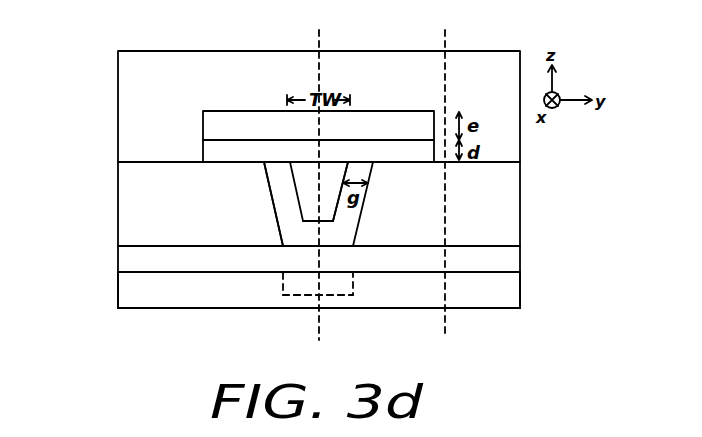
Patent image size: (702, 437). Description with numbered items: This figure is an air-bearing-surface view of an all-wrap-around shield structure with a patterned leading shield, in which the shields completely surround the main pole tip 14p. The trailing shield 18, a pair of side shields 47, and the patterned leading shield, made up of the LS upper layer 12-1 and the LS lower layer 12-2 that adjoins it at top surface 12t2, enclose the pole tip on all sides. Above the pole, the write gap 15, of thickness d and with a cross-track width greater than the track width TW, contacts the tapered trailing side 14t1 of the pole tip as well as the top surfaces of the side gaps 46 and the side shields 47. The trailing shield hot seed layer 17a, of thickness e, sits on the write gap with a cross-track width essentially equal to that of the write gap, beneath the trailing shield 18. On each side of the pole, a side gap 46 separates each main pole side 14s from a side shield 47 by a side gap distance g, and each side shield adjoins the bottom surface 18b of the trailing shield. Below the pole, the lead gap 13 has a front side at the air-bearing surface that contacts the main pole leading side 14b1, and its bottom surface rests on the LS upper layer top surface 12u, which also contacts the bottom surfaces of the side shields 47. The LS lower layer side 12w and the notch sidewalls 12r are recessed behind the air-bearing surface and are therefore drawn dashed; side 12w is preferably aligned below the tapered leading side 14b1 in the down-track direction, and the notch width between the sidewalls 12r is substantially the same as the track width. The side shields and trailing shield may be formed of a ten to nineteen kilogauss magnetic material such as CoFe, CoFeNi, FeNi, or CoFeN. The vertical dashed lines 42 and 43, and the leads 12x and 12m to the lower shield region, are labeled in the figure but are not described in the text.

The trailing shield 18 is at (490, 62).
The trailing shield hot seed layer 17a is at (212, 122).
The write gap 15 is at (212, 148).
The bottom surface of trailing shield 18b is at (135, 163).
The side shields 47 is at (132, 193).
The side gap 46 is at (283, 201).
The LS upper layer top surface 12u is at (131, 246).
The main pole tip 14p is at (333, 168).
The tapered trailing side 14t1 is at (305, 158).
The main pole side 14s is at (372, 168).
The tapered leading side 14b1 is at (312, 222).
The lead gap 13 is at (328, 232).
The center line 42 is at (318, 187).
The reference line 43 is at (448, 185).
The LS upper layer 12-1 is at (505, 254).
The insulating layer 12x is at (518, 296).
The side of insulating layer 12m is at (133, 310).
The LS lower layer 12-2 is at (205, 298).
The sidewalls 12r is at (282, 282).
The LS lower layer side 12w is at (337, 295).
The top surface of LS lower layer 12t2 is at (495, 272).